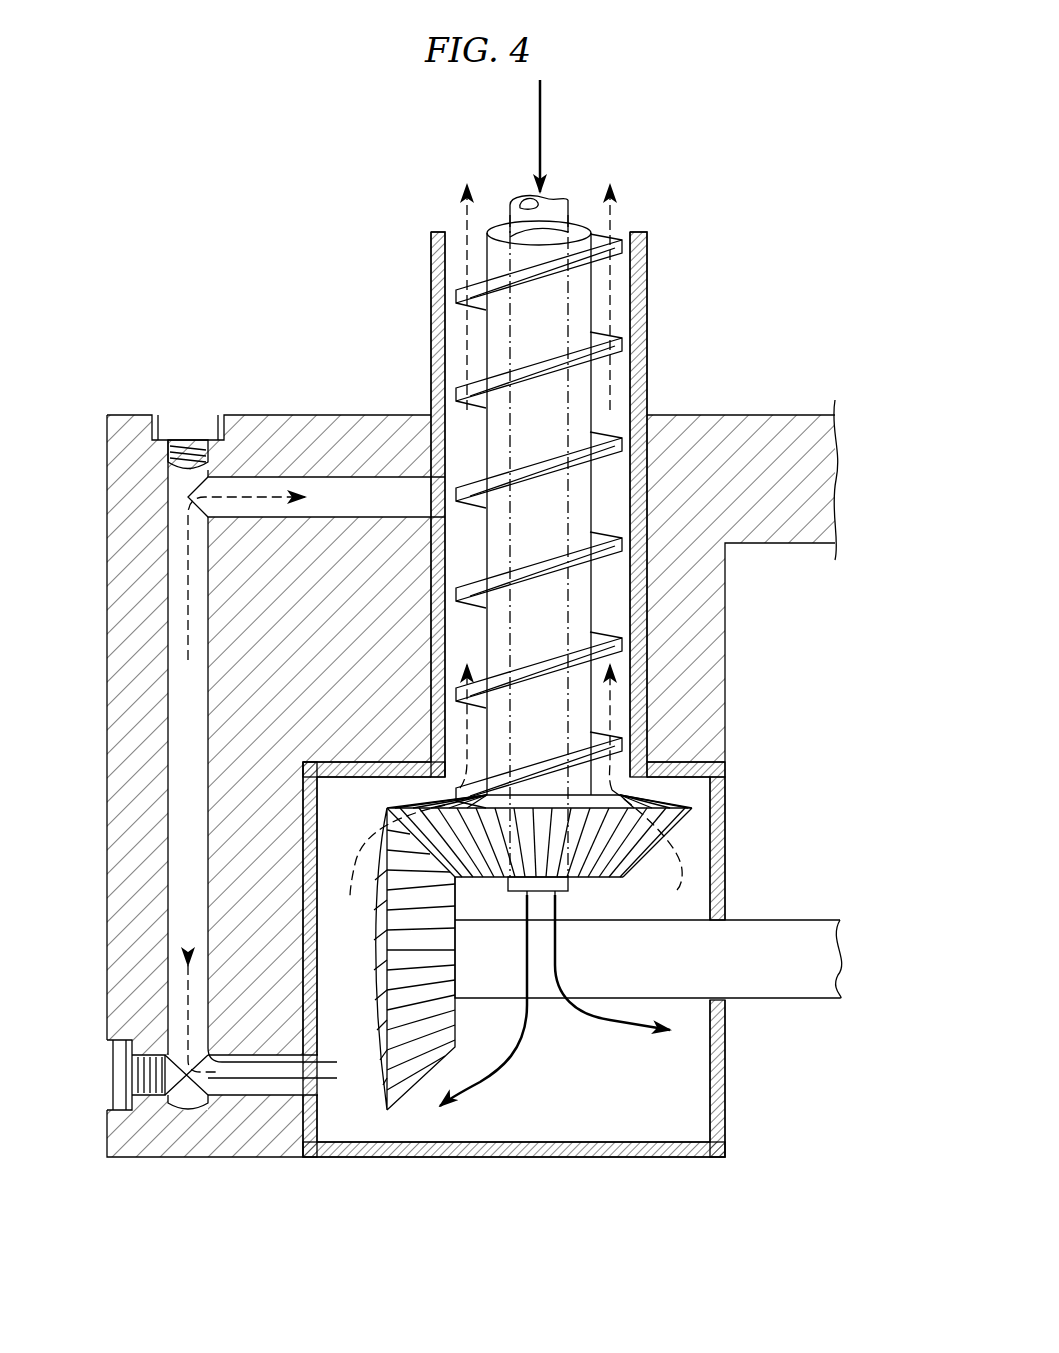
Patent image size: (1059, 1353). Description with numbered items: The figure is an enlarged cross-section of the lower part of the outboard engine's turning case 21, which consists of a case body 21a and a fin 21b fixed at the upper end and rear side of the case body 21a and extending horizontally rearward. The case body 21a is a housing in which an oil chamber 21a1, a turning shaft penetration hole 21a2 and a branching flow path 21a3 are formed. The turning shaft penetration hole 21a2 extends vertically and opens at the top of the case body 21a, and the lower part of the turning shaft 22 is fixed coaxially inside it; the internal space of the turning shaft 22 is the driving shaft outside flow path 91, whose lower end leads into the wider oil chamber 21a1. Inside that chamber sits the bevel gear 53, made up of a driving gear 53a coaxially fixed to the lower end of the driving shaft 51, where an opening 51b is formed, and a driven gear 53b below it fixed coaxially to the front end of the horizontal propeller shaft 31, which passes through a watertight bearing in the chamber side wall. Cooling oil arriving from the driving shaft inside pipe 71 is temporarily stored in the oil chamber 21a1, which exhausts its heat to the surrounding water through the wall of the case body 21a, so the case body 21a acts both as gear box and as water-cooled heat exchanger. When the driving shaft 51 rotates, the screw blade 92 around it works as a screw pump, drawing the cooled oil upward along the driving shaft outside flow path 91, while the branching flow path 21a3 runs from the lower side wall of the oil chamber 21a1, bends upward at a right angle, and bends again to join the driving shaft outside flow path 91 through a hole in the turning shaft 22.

The turning case 21 is at (107, 705).
The case body 21a is at (388, 1158).
The oil chamber 21a1 is at (602, 1140).
The turning shaft penetration hole 21a2 is at (620, 583).
The branching flow path 21a3 is at (168, 925).
The fin 21b is at (765, 418).
The turning shaft 22 is at (434, 300).
The propeller shaft 31 is at (778, 920).
The driving shaft 51 is at (590, 293).
The opening 51b is at (570, 882).
The bevel gear 53 is at (582, 1224).
The driving gear 53a is at (482, 870).
The driven gear 53b is at (430, 1053).
The driving shaft inside pipe 71 is at (556, 202).
The driving shaft outside flow path 91 is at (632, 402).
The screw blade 92 is at (530, 365).